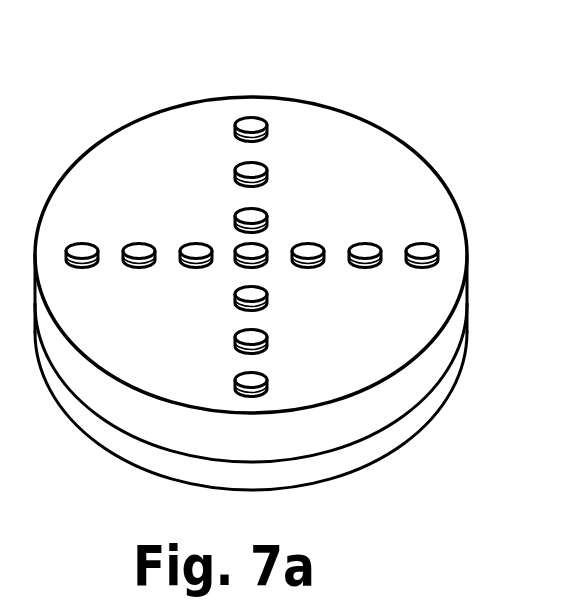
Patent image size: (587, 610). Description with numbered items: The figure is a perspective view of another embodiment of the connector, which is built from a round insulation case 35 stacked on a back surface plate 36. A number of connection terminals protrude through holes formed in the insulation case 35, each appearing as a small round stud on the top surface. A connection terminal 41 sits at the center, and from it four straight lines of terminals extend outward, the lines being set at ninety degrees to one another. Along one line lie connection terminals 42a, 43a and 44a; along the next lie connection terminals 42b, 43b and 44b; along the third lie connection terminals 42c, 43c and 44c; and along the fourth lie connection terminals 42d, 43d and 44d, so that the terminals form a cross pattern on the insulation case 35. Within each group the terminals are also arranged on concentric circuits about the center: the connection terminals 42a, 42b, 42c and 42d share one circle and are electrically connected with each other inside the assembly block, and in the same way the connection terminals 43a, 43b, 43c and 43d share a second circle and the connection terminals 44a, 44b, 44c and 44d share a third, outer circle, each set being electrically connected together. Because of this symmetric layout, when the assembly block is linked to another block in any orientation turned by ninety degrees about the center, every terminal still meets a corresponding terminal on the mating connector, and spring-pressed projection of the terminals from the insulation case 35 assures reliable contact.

The insulation case 35 is at (398, 173).
The back surface plate 36 is at (395, 435).
The connection terminal 41 is at (263, 245).
The connection terminal 42a is at (260, 212).
The connection terminal 42b is at (307, 269).
The connection terminal 42c is at (242, 297).
The connection terminal 42d is at (193, 243).
The connection terminal 43a is at (259, 166).
The connection terminal 43b is at (364, 269).
The connection terminal 43c is at (242, 340).
The connection terminal 43d is at (136, 243).
The connection terminal 44a is at (251, 118).
The connection terminal 44b is at (421, 269).
The connection terminal 44c is at (242, 383).
The connection terminal 44d is at (79, 243).